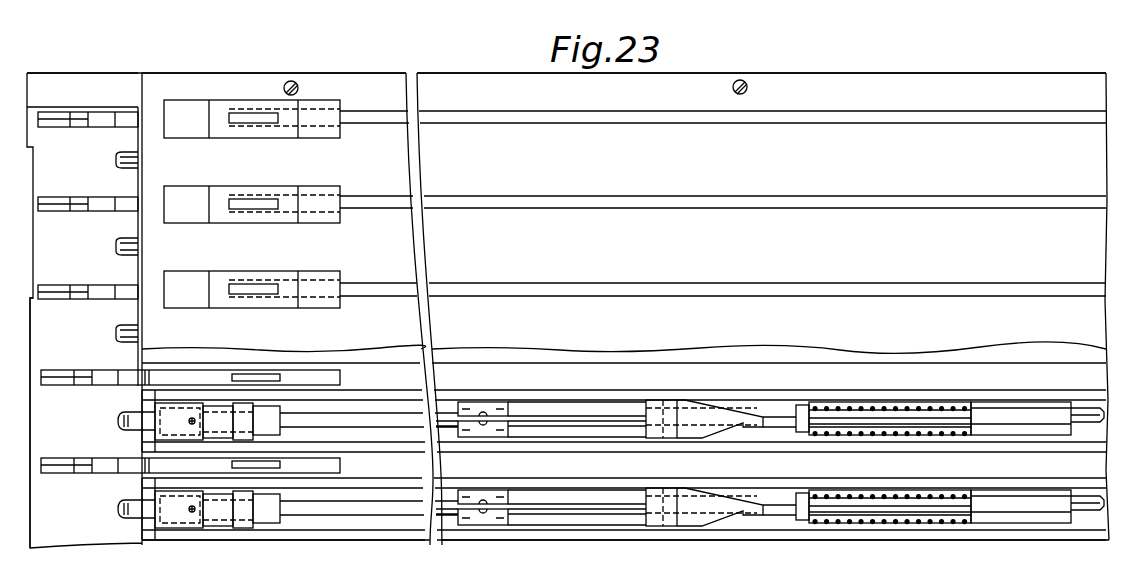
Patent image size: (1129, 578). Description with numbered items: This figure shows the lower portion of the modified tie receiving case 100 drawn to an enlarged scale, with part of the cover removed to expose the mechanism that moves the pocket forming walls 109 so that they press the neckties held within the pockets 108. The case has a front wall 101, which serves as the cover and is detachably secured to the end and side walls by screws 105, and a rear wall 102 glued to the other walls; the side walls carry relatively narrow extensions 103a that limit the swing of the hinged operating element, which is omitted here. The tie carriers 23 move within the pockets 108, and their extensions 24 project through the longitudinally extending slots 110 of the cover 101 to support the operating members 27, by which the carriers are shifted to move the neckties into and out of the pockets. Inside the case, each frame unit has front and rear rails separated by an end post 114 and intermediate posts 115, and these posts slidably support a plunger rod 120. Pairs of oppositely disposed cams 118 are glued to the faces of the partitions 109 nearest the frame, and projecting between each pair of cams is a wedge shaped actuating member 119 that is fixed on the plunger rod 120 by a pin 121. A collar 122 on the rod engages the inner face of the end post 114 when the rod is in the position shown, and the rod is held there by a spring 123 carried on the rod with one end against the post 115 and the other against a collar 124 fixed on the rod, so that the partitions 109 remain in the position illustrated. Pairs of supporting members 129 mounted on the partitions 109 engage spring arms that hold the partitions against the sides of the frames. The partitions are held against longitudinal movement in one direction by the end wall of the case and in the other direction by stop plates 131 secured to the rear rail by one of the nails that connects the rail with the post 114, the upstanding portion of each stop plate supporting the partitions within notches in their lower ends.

The extension of side wall 103a is at (45, 82).
The carrier 23 is at (102, 115).
The plunger rod 120 is at (128, 152).
The operating member 27 is at (188, 110).
The extension of carrier 24 is at (247, 117).
The screw 105 is at (292, 80).
The tie receiving case 100 is at (342, 73).
The longitudinally extending slot 110 is at (498, 117).
The front wall 101 is at (867, 82).
The rear wall 102 is at (95, 534).
The stop plate 131 is at (145, 518).
The end post 114 is at (178, 518).
The collar 122 is at (268, 513).
The supporting member 129 is at (478, 523).
The pocket 108 is at (603, 463).
The pin 121 is at (660, 525).
The actuating member 119 is at (720, 505).
The cam 118 is at (759, 517).
The collar 124 is at (801, 517).
The spring 123 is at (937, 518).
The intermediate post 115 is at (1014, 517).
The pocket forming wall 109 is at (1059, 478).